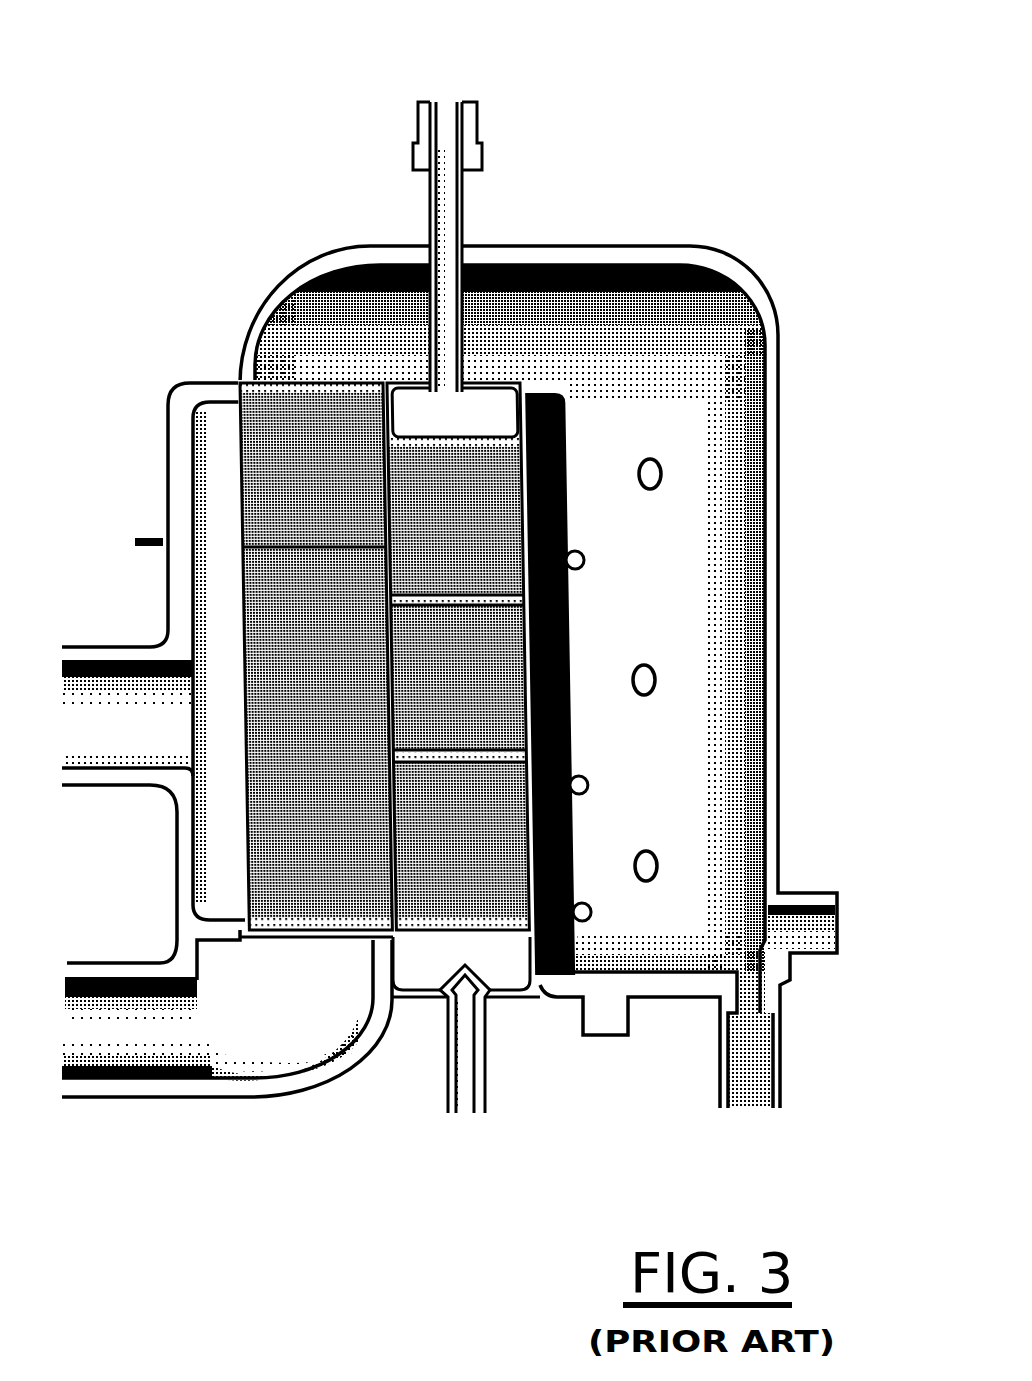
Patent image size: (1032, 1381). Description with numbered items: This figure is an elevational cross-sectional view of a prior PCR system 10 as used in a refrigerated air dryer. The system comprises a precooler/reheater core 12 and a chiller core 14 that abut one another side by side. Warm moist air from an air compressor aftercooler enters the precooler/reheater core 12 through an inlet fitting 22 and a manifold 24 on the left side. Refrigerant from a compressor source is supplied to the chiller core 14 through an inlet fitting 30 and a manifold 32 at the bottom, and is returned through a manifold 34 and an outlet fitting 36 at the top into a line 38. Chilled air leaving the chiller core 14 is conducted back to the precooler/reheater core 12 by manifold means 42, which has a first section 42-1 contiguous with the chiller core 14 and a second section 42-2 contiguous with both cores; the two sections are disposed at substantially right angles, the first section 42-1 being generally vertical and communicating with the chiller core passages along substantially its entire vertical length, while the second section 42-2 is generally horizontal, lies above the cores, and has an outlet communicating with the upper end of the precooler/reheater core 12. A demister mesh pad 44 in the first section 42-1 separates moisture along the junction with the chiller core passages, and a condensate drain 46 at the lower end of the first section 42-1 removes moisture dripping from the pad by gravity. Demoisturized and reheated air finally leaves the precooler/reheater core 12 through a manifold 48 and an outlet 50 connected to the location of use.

The PCR system 10 is at (668, 116).
The precooler/reheater core 12 is at (262, 463).
The chiller core 14 is at (405, 830).
The inlet fitting 22 is at (112, 786).
The manifold 24 is at (177, 430).
The inlet fitting 30 is at (447, 1100).
The manifold 32 is at (500, 997).
The manifold 34 is at (497, 380).
The outlet fitting 36 is at (470, 200).
The line 38 is at (478, 105).
The manifold means 42 is at (554, 638).
The first section 42-1 is at (750, 606).
The second section 42-2 is at (318, 283).
The demister mesh pad 44 is at (562, 978).
The condensate drain 46 is at (780, 1055).
The manifold 48 is at (282, 1085).
The outlet 50 is at (96, 1100).